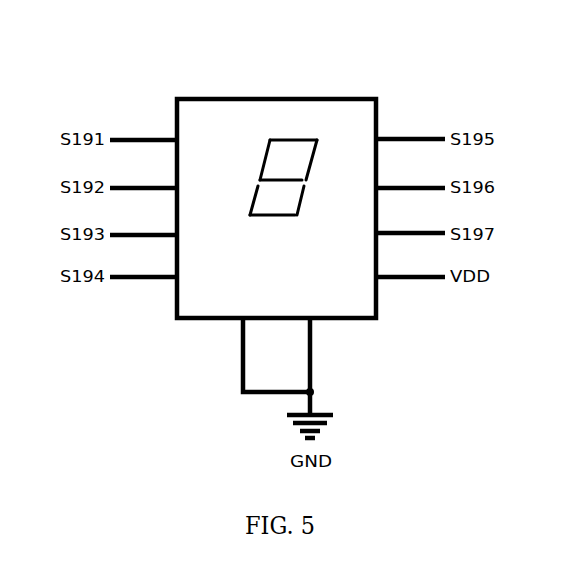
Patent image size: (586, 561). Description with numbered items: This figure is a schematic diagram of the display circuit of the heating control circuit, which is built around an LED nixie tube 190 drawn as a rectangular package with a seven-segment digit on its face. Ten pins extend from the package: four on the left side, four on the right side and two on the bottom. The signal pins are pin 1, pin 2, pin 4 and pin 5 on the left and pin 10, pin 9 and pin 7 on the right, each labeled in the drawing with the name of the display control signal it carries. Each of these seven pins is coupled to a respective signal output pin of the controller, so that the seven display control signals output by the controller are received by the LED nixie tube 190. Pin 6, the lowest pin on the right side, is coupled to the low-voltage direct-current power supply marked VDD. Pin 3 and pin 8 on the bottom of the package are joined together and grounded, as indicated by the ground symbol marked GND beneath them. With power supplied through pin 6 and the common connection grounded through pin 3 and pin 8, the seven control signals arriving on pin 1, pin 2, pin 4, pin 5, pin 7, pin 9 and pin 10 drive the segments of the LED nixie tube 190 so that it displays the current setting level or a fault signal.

The LED nixie tube 190 is at (270, 110).
The pin 1 is at (143, 127).
The pin 2 is at (143, 175).
The pin 3 is at (266, 355).
The pin 4 is at (143, 222).
The pin 5 is at (143, 264).
The pin 6 is at (410, 263).
The pin 7 is at (410, 218).
The pin 8 is at (301, 366).
The pin 9 is at (410, 173).
The pin 10 is at (410, 126).